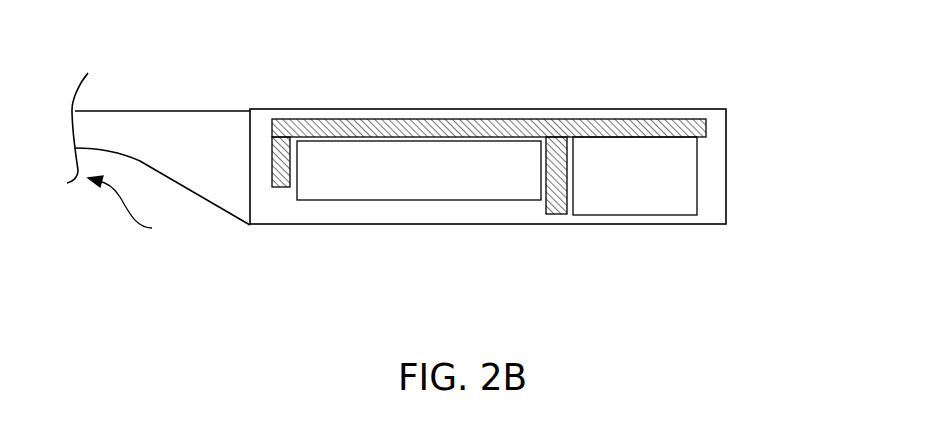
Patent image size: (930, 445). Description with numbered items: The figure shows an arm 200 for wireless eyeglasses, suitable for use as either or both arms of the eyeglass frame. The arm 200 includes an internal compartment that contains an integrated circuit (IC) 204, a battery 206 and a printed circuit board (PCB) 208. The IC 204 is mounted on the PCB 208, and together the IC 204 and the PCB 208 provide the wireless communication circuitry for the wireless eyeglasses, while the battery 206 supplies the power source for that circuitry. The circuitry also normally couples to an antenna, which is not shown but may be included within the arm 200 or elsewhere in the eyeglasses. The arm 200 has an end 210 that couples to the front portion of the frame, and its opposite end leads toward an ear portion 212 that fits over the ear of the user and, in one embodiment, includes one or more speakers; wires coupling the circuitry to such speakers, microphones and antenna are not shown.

The arm 200 is at (182, 127).
The integrated circuit (IC) 204 is at (688, 206).
The battery 206 is at (525, 194).
The printed circuit board (PCB) 208 is at (412, 120).
The end 210 is at (726, 167).
The ear portion 212 is at (149, 211).